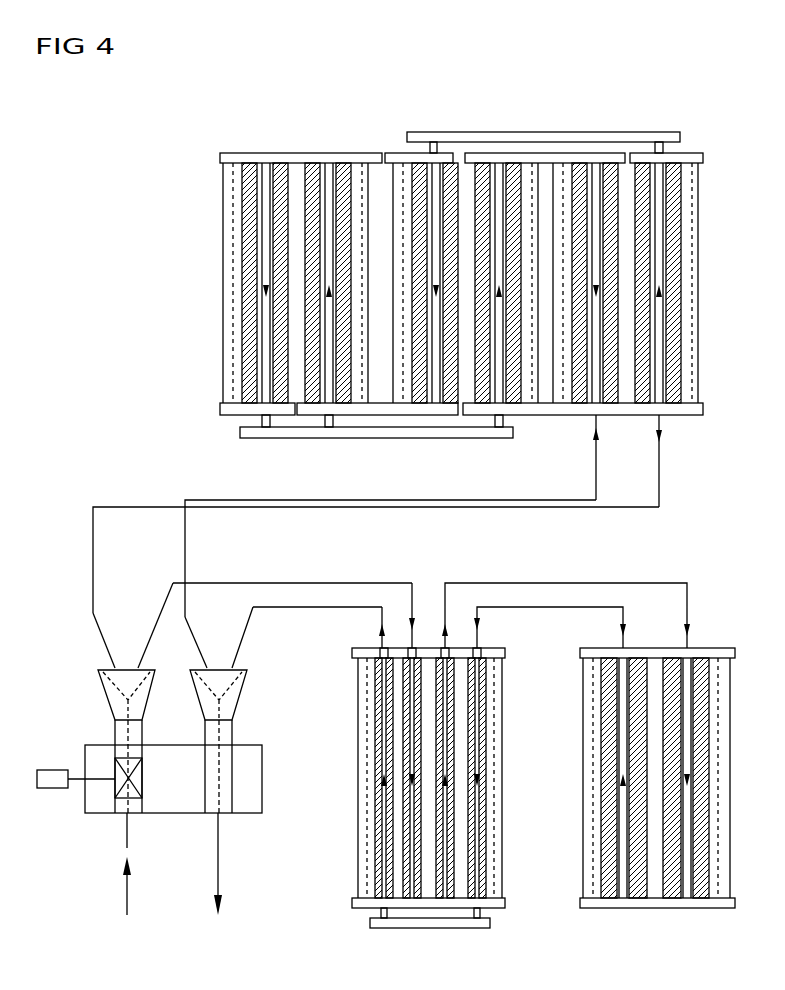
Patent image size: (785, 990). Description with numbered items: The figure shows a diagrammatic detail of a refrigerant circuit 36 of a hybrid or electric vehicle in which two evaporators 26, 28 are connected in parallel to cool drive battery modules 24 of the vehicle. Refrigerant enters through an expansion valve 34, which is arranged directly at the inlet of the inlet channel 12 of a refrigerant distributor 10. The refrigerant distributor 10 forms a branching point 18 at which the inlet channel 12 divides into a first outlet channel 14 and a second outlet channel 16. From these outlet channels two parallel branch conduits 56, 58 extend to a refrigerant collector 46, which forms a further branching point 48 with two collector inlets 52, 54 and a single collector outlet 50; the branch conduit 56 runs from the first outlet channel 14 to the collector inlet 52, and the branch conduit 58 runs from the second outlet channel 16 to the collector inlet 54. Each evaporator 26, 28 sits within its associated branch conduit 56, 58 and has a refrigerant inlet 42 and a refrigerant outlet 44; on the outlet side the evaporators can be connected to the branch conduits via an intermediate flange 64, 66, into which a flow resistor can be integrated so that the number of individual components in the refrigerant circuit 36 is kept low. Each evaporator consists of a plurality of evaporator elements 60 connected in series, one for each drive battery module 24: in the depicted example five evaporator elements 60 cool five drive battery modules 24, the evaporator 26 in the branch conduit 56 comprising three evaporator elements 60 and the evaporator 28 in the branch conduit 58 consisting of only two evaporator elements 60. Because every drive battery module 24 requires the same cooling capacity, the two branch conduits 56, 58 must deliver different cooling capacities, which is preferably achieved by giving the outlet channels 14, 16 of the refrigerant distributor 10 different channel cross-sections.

The refrigerant circuit 36 is at (680, 57).
The evaporator 26 is at (214, 334).
The drive battery module 24 is at (231, 180).
The evaporator element 60 is at (238, 254).
The intermediate flange 64 is at (703, 405).
The intermediate flange 66 is at (558, 417).
The refrigerant outlet 44 is at (592, 423).
The refrigerant inlet 42 is at (669, 428).
The branch conduit 56 is at (204, 500).
The branch conduit 58 is at (305, 590).
The outlet channel 14 is at (91, 649).
The outlet channel 16 is at (138, 647).
The refrigerant distributor 10 is at (102, 684).
The branching point 18 is at (112, 700).
The inlet channel 12 is at (110, 733).
The expansion valve 34 is at (107, 792).
The collector inlet 52 is at (211, 644).
The collector inlet 54 is at (249, 652).
The branching point 48 is at (242, 690).
The refrigerant collector 46 is at (238, 706).
The collector outlet 50 is at (238, 736).
The evaporator 28 is at (340, 882).